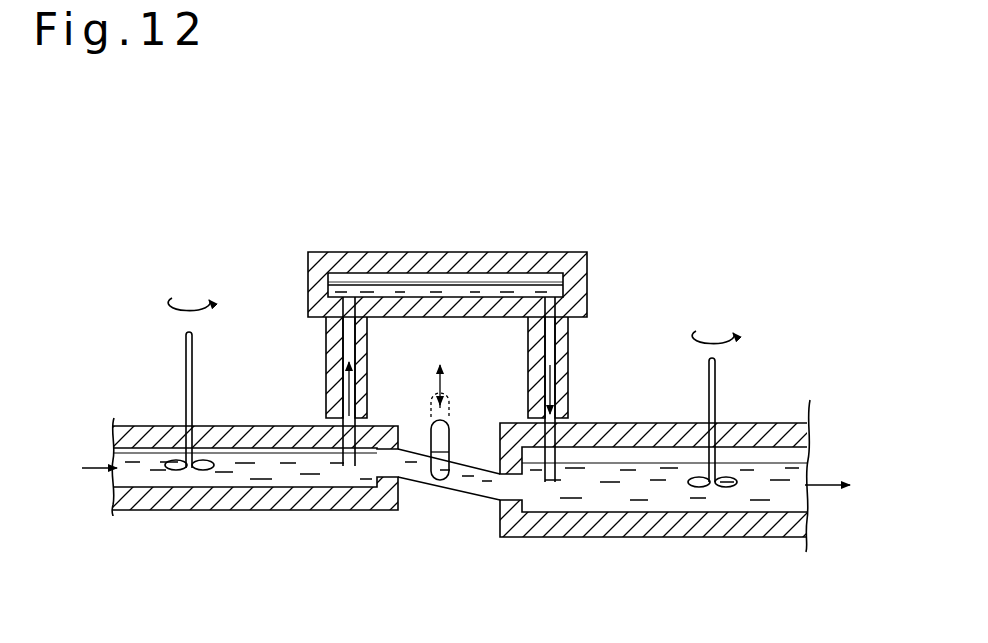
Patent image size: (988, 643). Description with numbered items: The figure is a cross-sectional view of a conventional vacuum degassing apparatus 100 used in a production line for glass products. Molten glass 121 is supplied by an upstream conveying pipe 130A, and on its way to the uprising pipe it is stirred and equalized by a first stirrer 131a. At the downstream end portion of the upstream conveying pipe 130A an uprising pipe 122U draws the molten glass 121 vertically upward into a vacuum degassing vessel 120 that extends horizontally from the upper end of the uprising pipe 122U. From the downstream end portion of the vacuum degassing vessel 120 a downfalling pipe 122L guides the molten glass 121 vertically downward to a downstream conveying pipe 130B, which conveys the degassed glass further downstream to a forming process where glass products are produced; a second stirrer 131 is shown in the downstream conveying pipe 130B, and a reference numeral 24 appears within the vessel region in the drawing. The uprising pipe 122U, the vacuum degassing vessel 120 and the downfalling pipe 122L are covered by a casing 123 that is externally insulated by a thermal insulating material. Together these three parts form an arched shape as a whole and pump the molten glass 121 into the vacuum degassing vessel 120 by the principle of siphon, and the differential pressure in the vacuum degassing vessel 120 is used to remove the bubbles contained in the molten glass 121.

The vacuum degassing apparatus 100 is at (636, 160).
The vacuum degassing vessel 120 is at (441, 250).
The molten glass 121 is at (343, 260).
The uprising pipe 122U is at (334, 333).
The downfalling pipe 122L is at (568, 331).
The casing 123 is at (365, 252).
The heater 24 is at (510, 274).
The upstream conveying pipe 130A is at (148, 425).
The downstream conveying pipe 130B is at (768, 418).
The stirrer 131 is at (716, 382).
The first stirrer 131a is at (185, 357).